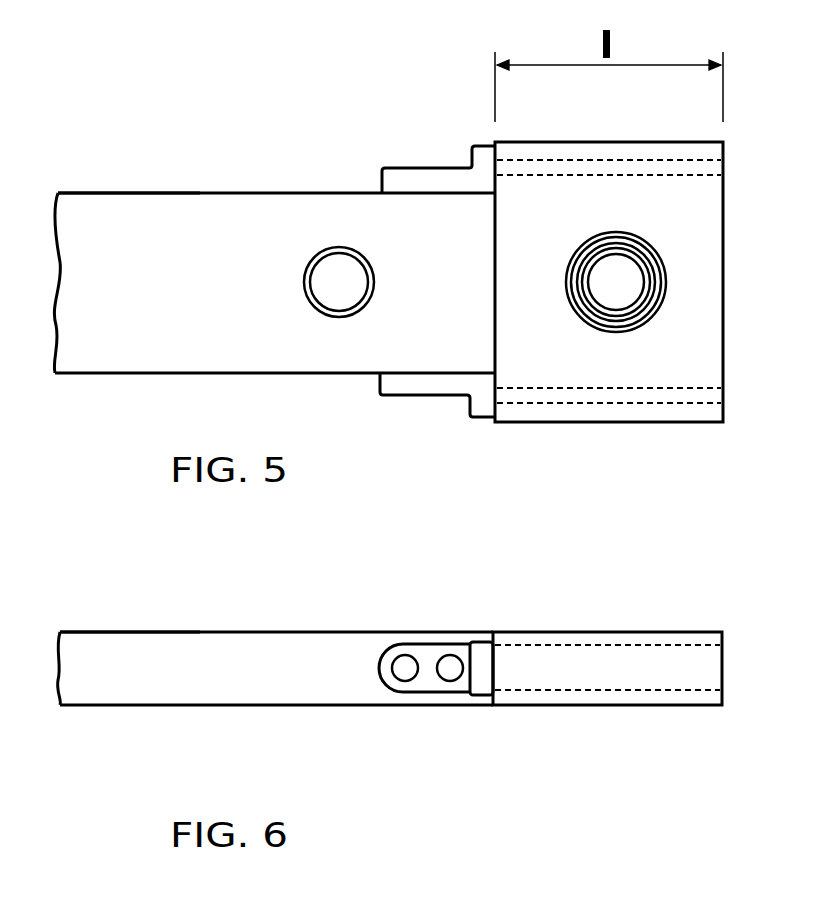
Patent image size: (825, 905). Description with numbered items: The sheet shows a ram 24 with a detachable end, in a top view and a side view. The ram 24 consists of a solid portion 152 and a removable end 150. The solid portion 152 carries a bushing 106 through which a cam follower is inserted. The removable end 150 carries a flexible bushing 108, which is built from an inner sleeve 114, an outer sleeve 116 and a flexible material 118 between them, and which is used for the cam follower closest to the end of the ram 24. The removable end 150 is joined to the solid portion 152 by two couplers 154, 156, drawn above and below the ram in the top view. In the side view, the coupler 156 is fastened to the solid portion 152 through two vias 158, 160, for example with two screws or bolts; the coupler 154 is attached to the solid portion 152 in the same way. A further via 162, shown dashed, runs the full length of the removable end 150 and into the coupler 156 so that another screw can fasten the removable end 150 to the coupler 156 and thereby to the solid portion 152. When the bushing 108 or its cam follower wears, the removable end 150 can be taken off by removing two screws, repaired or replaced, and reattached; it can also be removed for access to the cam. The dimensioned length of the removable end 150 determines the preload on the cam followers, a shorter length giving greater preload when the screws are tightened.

In FIG. 5, the ram 24 is at (98, 193).
In FIG. 6, the ram 24 is at (112, 630).
In FIG. 5, the bushing 106 is at (328, 240).
In FIG. 5, the flexible bushing 108 is at (653, 238).
In FIG. 5, the inner sleeve 114 is at (612, 308).
In FIG. 5, the outer sleeve 116 is at (663, 265).
In FIG. 5, the flexible material 118 is at (648, 303).
In FIG. 5, the removable end 150 is at (608, 423).
In FIG. 6, the removable end 150 is at (622, 705).
In FIG. 5, the solid portion 152 is at (243, 217).
In FIG. 6, the solid portion 152 is at (263, 655).
In FIG. 5, the coupler 154 is at (423, 167).
In FIG. 5, the coupler 156 is at (412, 395).
In FIG. 6, the coupler 156 is at (415, 650).
In FIG. 6, the via 158 is at (404, 676).
In FIG. 6, the via 160 is at (450, 676).
In FIG. 5, the via 162 is at (703, 395).
In FIG. 6, the via 162 is at (703, 670).